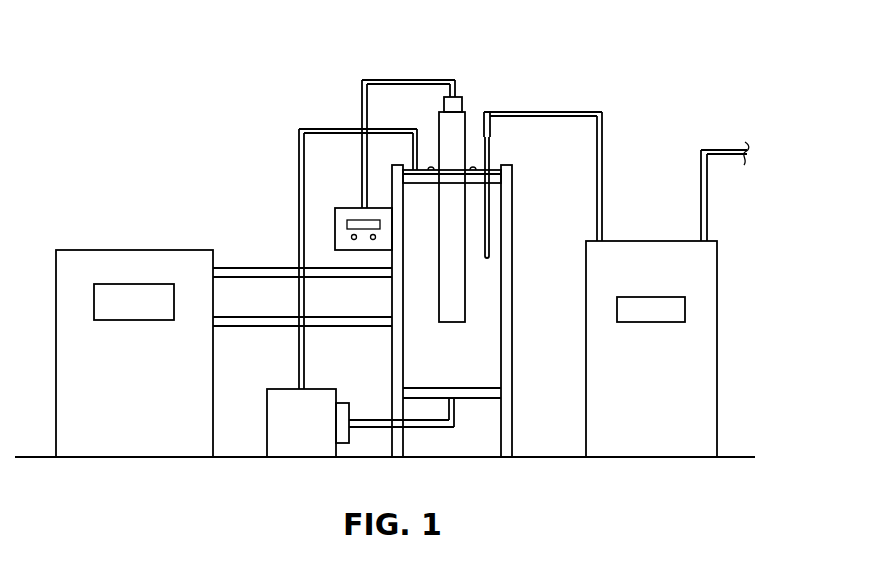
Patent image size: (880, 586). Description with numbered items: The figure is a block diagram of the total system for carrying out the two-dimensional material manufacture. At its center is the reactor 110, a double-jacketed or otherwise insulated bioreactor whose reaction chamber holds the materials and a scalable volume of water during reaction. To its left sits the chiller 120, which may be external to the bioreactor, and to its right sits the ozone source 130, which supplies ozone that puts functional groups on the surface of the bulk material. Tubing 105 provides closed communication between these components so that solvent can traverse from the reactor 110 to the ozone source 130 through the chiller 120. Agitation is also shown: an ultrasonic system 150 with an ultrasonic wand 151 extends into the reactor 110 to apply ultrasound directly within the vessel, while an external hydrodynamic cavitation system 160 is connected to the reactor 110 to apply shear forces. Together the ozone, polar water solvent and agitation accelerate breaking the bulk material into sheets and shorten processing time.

The tubing 105 is at (347, 317).
The reactor 110 is at (473, 362).
The chiller 120 is at (158, 377).
The ozone source 130 is at (675, 375).
The ultrasonic system 150 is at (335, 221).
The ultrasonic wand 151 is at (438, 145).
The external hydrodynamic cavitation system 160 is at (324, 436).